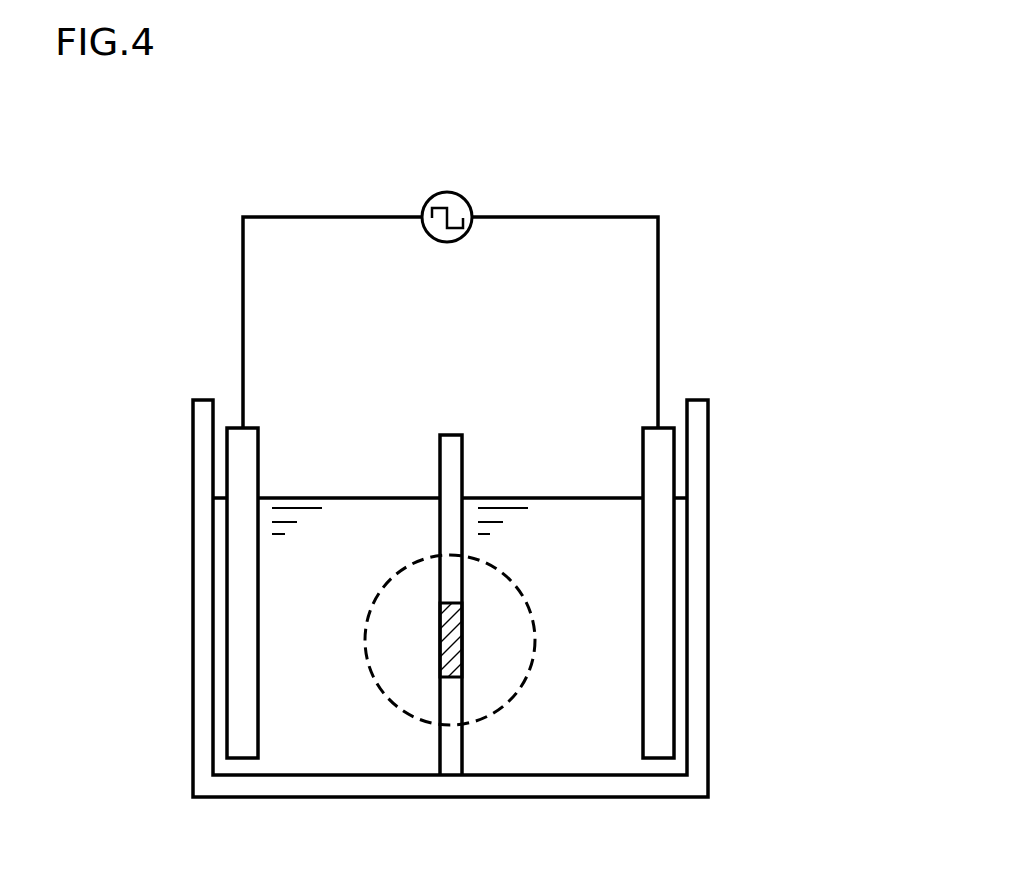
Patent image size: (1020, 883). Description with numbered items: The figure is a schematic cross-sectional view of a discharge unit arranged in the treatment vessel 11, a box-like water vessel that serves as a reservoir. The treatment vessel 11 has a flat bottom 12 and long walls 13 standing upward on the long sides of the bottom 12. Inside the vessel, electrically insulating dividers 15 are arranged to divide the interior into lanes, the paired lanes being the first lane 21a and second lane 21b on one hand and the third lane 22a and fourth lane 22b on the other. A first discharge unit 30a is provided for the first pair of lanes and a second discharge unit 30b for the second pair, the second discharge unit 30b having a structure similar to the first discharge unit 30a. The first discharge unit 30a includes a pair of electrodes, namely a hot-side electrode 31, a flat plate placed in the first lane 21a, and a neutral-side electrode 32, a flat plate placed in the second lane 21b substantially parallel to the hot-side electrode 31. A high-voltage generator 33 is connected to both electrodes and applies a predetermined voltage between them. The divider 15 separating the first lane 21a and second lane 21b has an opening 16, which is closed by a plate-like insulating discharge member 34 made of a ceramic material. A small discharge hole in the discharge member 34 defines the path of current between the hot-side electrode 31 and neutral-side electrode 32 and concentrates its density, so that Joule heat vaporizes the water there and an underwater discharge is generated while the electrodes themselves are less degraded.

The treatment vessel 11 is at (453, 636).
The bottom 12 is at (567, 785).
The long wall 13 is at (453, 636).
The divider 15 is at (465, 573).
The opening 16 is at (474, 627).
The discharge member 34 is at (440, 645).
The hot-side electrode 31 is at (241, 738).
The neutral-side electrode 32 is at (657, 652).
The high-voltage generator 33 is at (449, 192).
The first discharge unit 30a is at (556, 283).
The second discharge unit 30b is at (556, 283).
The first lane 21a is at (365, 394).
The third lane 22a is at (355, 440).
The second lane 21b is at (565, 394).
The fourth lane 22b is at (555, 440).